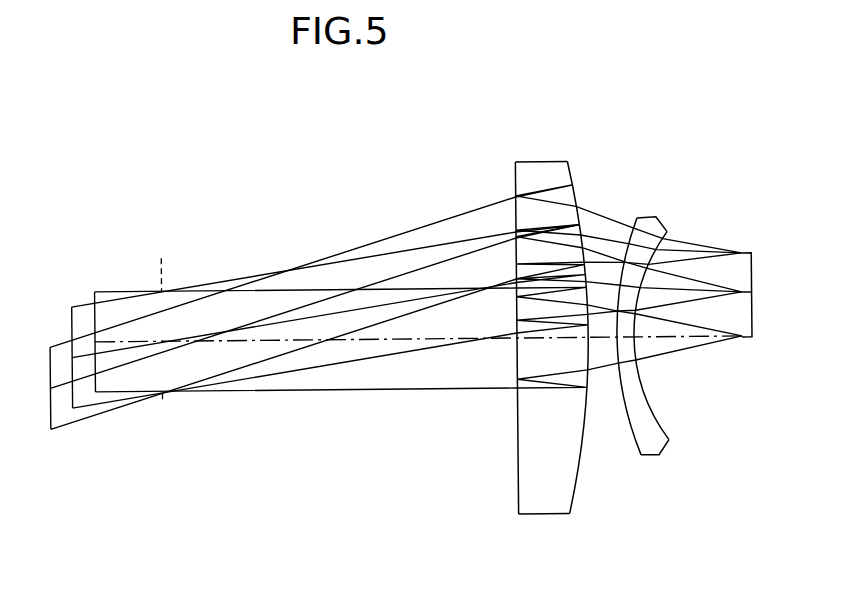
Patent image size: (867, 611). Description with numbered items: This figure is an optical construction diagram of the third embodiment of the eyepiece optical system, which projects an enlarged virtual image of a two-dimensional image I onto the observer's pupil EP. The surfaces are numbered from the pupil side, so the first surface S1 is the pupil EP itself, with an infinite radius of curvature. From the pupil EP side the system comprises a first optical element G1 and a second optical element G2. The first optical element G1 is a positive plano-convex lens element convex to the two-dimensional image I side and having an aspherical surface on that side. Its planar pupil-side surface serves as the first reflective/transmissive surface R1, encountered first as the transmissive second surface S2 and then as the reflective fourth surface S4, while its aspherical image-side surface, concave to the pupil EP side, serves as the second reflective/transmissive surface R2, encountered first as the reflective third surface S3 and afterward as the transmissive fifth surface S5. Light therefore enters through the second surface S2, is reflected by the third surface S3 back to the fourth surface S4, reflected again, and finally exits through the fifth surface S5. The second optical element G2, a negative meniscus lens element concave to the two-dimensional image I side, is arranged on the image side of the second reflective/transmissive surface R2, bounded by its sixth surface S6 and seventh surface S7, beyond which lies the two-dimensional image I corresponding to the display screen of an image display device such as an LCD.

The first optical element G1 is at (586, 344).
The second optical element G2 is at (658, 317).
The two-dimensional image I is at (753, 253).
The first surface S1 is at (167, 313).
The pupil EP is at (167, 313).
The second surface S2 is at (491, 372).
The fourth surface S4 is at (491, 372).
The first reflective/transmissive surface R1 is at (517, 499).
The third surface S3 is at (653, 342).
The fifth surface S5 is at (653, 342).
The second reflective/transmissive surface R2 is at (573, 488).
The sixth surface S6 is at (626, 414).
The seventh surface S7 is at (645, 395).